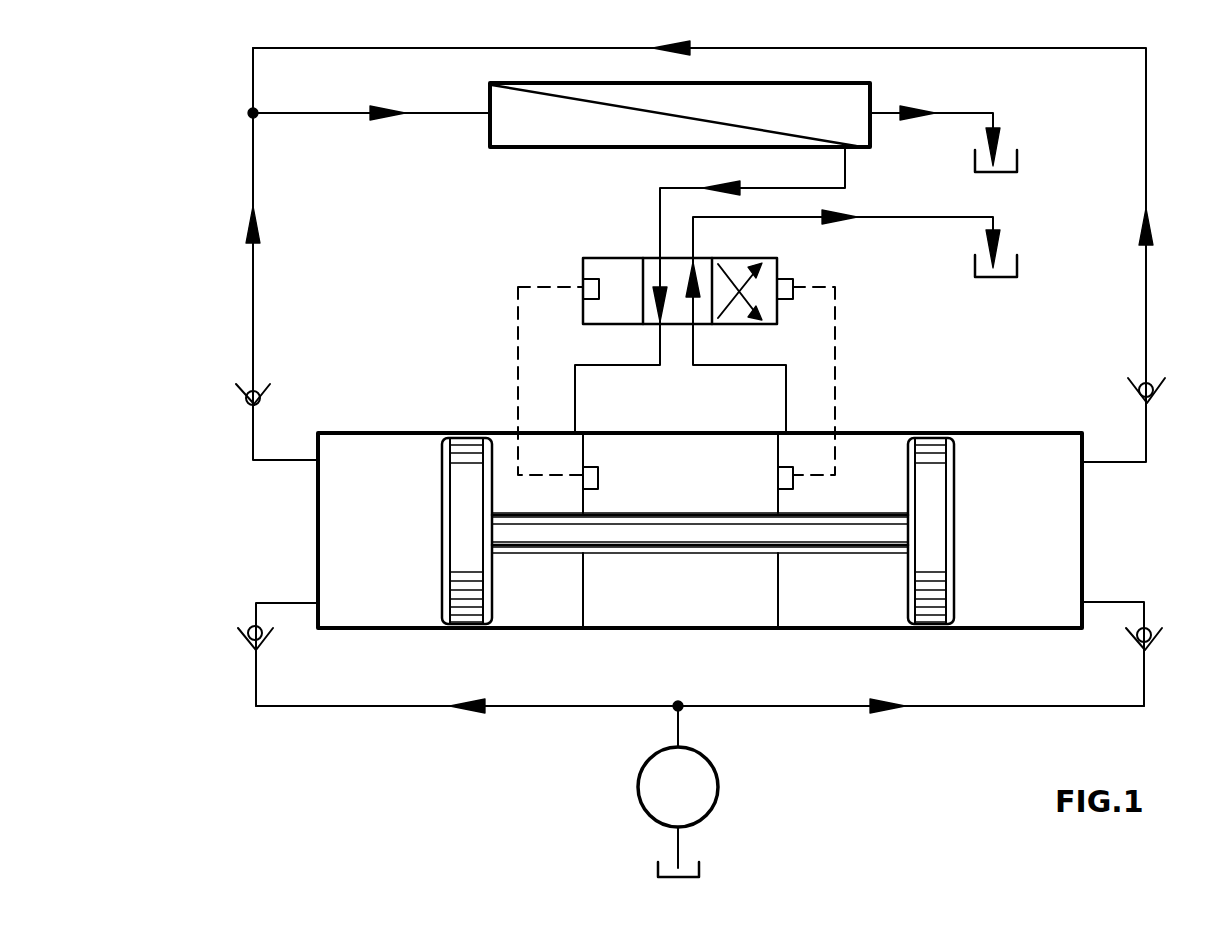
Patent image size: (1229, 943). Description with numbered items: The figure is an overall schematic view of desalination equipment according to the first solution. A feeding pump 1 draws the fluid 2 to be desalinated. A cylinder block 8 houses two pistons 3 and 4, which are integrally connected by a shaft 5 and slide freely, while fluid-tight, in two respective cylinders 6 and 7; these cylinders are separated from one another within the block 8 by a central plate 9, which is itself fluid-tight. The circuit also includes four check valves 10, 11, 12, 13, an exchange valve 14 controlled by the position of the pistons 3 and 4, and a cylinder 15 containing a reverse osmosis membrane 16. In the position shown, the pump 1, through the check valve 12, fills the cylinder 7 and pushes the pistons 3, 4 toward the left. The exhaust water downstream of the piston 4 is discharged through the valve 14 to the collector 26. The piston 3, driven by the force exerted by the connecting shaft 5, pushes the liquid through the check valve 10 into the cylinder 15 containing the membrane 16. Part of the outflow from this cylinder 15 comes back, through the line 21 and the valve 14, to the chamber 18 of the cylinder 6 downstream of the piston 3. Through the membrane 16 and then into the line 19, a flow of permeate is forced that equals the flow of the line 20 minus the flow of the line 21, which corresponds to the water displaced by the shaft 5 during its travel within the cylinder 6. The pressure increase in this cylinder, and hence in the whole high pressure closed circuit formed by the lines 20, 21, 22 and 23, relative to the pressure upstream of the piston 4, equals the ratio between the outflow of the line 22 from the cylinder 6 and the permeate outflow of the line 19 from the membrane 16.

The feeding pump 1 is at (650, 778).
The fluid to be desalinated 2 is at (684, 868).
The piston 3 is at (458, 510).
The piston 4 is at (928, 520).
The shaft 5 is at (858, 533).
The cylinder 6 is at (372, 433).
The cylinder 7 is at (1026, 433).
The cylinder block 8 is at (938, 428).
The central plate 9 is at (696, 594).
The check valve 10 is at (252, 406).
The check valve 11 is at (244, 645).
The check valve 12 is at (1148, 628).
The check valve 13 is at (1152, 383).
The exchange valve 14 is at (790, 270).
The cylinder 15 is at (517, 147).
The reverse osmosis membrane 16 is at (597, 102).
The chamber 18 is at (538, 596).
The line 19 is at (960, 112).
The line 20 is at (318, 115).
The line 21 is at (845, 166).
The line 22 is at (250, 312).
The line 23 is at (578, 398).
The collector 26 is at (1006, 250).